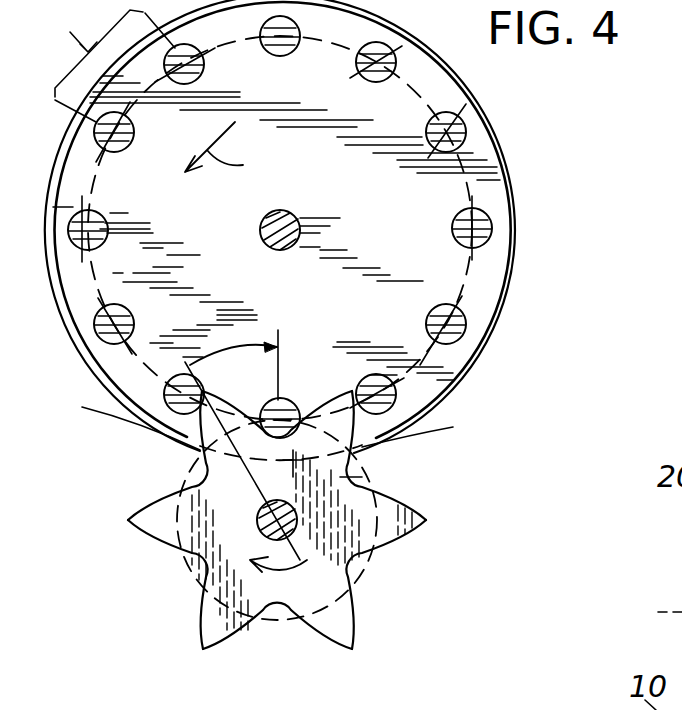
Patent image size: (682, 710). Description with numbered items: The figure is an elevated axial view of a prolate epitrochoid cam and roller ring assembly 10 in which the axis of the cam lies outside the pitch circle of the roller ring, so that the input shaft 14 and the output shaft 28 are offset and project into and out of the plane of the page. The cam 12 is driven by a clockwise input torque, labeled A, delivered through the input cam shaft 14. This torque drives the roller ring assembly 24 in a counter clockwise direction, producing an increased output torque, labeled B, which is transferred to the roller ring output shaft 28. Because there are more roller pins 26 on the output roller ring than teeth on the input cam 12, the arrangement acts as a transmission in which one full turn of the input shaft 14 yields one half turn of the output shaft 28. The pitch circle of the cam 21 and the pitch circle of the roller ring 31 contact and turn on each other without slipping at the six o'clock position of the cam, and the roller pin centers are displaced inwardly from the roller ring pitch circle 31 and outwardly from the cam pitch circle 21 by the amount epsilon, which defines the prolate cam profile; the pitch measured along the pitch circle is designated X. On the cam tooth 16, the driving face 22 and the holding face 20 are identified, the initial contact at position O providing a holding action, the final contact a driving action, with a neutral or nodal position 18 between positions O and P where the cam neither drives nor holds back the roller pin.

The prolate epitrochoid cam and roller ring assembly 10 is at (547, 192).
The cam 12 is at (363, 473).
The input shaft 14 is at (375, 567).
The cam tooth 16 is at (432, 513).
The neutral or nodal position 18 is at (281, 610).
The holding face of the cam tooth 20 is at (162, 548).
The pitch circle of the cam 21 is at (197, 607).
The driving face of the cam tooth 22 is at (147, 503).
The roller ring assembly 24 is at (107, 175).
The roller pin 26 is at (464, 128).
The output shaft 28 is at (262, 232).
The pitch circle of the roller ring 31 is at (90, 290).